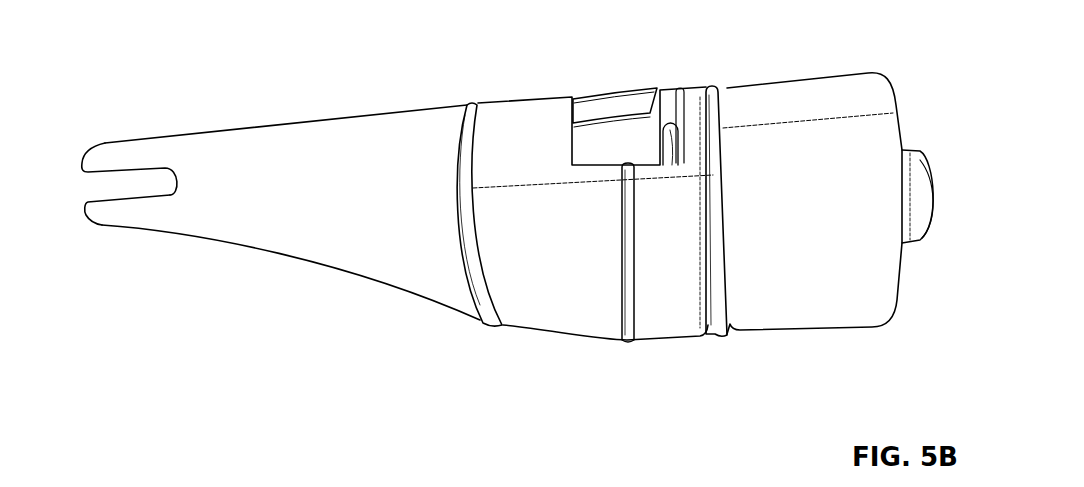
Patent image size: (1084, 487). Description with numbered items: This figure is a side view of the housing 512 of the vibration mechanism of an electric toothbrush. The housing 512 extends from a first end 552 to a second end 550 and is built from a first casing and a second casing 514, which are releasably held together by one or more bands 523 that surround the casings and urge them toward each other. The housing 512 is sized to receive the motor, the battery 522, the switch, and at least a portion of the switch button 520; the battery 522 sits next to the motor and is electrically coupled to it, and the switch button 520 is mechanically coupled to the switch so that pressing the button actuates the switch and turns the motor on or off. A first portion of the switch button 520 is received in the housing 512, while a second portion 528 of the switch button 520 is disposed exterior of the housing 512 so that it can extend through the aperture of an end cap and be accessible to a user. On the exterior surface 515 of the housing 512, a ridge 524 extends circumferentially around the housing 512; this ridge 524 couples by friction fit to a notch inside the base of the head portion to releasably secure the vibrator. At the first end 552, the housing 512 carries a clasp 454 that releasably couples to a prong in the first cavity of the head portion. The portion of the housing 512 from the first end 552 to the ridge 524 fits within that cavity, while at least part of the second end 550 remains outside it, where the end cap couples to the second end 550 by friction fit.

The housing 512 is at (288, 150).
The first end 552 is at (107, 143).
The clasp 454 is at (93, 183).
The exterior surface 515 is at (243, 178).
The second casing 514 is at (297, 227).
The bands 523 is at (492, 323).
The ridge 524 is at (630, 340).
The battery 522 is at (630, 127).
The second end 550 is at (878, 90).
The switch button 520 is at (918, 162).
The second portion 528 is at (920, 187).